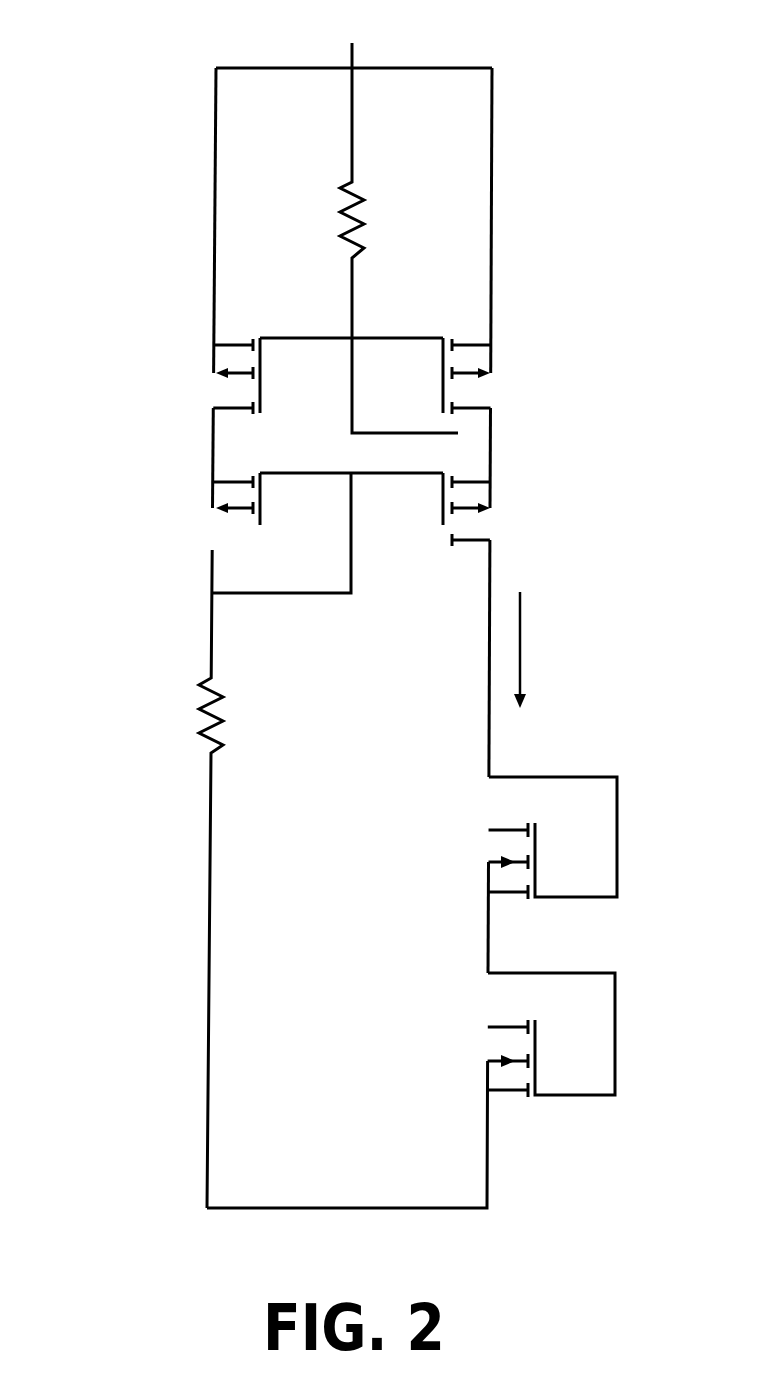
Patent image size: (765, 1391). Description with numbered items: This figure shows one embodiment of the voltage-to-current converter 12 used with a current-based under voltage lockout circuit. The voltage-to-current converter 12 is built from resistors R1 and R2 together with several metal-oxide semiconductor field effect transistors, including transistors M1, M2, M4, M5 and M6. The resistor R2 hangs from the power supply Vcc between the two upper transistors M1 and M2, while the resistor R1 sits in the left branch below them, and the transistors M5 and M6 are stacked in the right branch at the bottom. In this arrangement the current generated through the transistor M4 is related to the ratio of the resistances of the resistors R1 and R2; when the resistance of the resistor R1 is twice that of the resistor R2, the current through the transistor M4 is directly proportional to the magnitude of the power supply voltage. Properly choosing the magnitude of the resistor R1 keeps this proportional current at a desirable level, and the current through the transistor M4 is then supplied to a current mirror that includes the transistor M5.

The voltage-to-current converter 12 is at (131, 163).
The transistor M1 is at (202, 376).
The transistor M2 is at (501, 376).
The transistor M4 is at (500, 509).
The transistor M5 is at (518, 838).
The transistor M6 is at (517, 1035).
The resistor R1 is at (184, 879).
The resistor R2 is at (372, 250).